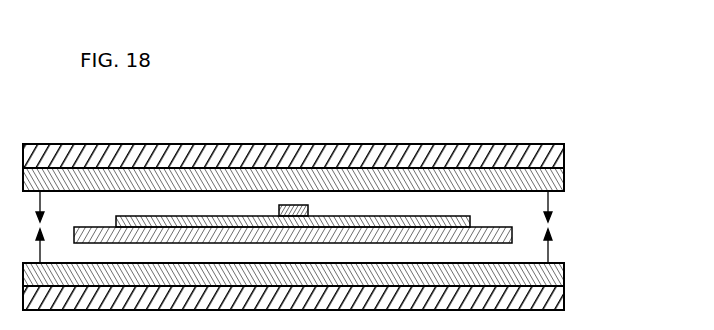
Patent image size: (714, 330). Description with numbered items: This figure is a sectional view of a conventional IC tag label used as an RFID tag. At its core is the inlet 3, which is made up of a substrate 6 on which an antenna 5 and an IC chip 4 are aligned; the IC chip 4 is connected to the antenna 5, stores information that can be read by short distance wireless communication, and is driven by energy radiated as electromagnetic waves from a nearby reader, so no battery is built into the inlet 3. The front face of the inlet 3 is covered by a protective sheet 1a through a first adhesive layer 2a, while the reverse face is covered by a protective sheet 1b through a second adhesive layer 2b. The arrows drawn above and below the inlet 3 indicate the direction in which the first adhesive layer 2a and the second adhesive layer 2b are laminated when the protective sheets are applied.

The protective sheet 1a is at (565, 154).
The first adhesive layer 2a is at (565, 182).
The second adhesive layer 2b is at (565, 272).
The protective sheet 1b is at (565, 297).
The inlet 3 is at (570, 205).
The IC chip 4 is at (293, 205).
The antenna 5 is at (132, 216).
The substrate 6 is at (97, 227).